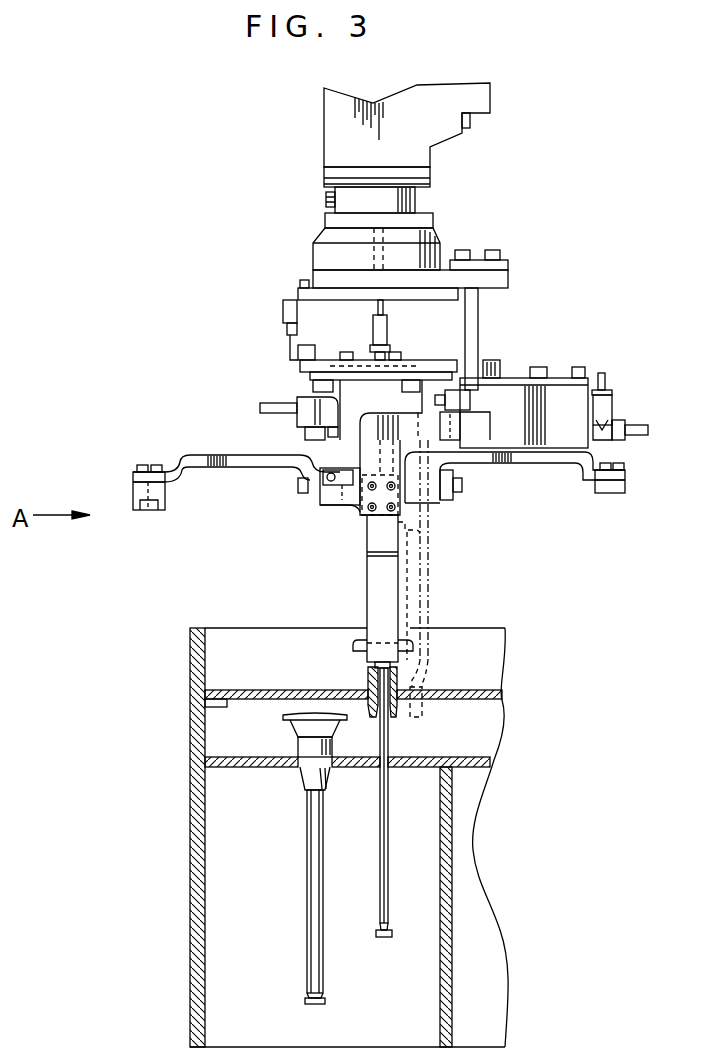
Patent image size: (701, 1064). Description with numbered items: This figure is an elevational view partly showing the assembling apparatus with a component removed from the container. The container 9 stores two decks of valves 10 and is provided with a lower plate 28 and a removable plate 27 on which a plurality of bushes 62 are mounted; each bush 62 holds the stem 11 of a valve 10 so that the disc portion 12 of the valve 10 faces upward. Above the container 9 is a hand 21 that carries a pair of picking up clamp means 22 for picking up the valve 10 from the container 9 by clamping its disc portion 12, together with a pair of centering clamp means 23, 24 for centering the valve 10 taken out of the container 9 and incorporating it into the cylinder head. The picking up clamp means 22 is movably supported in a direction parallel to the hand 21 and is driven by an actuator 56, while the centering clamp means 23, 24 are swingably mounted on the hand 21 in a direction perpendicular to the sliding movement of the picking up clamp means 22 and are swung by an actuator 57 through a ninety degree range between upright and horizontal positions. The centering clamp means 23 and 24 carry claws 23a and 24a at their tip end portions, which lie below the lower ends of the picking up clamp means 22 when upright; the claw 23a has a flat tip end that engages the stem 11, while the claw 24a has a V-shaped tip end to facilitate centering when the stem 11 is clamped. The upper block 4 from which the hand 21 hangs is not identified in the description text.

The robot wrist 4 is at (322, 152).
The hand 21 is at (442, 232).
The actuator 56 is at (513, 403).
The actuator 57 is at (353, 407).
The centering clamp means 24 is at (183, 455).
The claw 24a is at (135, 510).
The centering clamp means 23 is at (540, 468).
The claw 23a is at (608, 495).
The picking up clamp means 22 is at (367, 592).
The disc portion 12 is at (410, 625).
The container 9 is at (185, 888).
The removable plate 27 is at (467, 684).
The lower plate 28 is at (463, 749).
The bush 62 is at (367, 676).
The valve 10 is at (300, 904).
The stem 11 is at (307, 965).